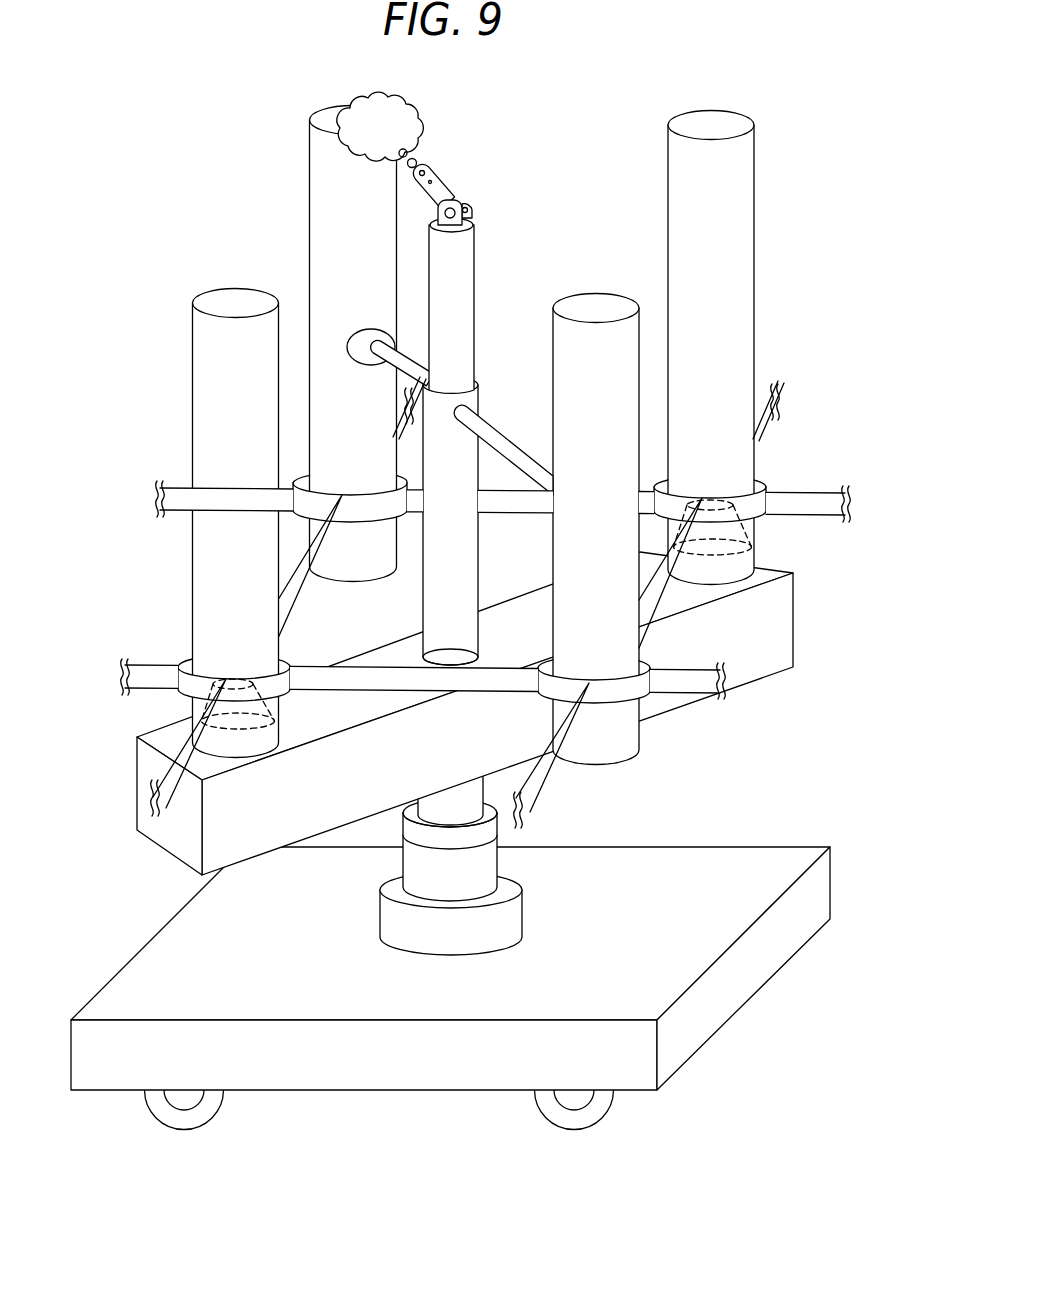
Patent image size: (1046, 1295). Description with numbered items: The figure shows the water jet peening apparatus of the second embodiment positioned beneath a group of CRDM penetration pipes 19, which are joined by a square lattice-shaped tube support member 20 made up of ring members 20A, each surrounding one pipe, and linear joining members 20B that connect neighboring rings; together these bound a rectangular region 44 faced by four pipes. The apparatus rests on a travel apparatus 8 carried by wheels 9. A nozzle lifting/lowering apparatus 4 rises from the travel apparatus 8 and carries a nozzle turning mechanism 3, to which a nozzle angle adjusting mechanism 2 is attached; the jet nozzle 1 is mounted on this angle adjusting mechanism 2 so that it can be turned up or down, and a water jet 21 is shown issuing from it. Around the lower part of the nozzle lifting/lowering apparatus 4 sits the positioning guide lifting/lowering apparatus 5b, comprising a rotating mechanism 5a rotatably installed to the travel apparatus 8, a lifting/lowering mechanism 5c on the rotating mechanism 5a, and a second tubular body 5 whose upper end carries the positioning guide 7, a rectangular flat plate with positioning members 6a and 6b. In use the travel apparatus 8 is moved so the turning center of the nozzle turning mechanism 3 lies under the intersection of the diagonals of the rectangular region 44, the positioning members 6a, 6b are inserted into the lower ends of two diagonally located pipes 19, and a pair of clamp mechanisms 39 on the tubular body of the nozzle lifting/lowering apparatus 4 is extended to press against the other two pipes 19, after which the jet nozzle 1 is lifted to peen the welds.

The jet nozzle 1 is at (448, 181).
The nozzle angle adjusting mechanism 2 is at (470, 212).
The nozzle turning mechanism 3 is at (475, 262).
The nozzle lifting/lowering apparatus 4 is at (423, 615).
The second tubular body 5 is at (437, 808).
The rotating mechanism 5a is at (528, 916).
The positioning guide lifting/lowering apparatus 5b is at (505, 859).
The lifting/lowering mechanism 5c is at (492, 835).
The positioning member 6a is at (272, 715).
The positioning member 6b is at (745, 535).
The positioning guide 7 is at (794, 630).
The travel apparatus 8 is at (725, 1017).
The wheels 9 is at (603, 1126).
The CRDM penetration pipe 19 is at (310, 193).
The tube support member 20 is at (815, 493).
The ring member 20A is at (395, 507).
The joining member 20B is at (173, 480).
The steam cloud 21 is at (412, 112).
The clamp mechanism 39 is at (405, 355).
The rectangular region 44 is at (307, 611).